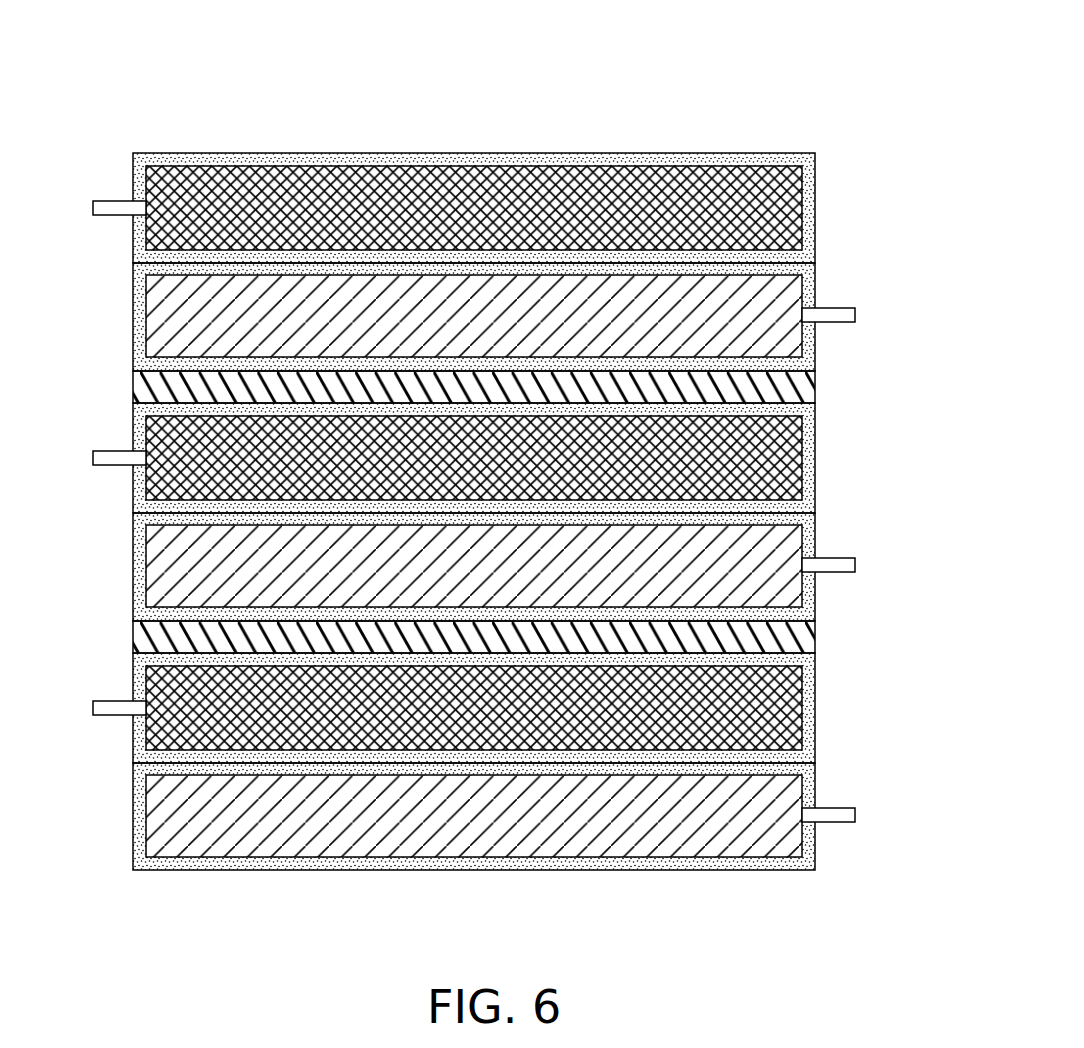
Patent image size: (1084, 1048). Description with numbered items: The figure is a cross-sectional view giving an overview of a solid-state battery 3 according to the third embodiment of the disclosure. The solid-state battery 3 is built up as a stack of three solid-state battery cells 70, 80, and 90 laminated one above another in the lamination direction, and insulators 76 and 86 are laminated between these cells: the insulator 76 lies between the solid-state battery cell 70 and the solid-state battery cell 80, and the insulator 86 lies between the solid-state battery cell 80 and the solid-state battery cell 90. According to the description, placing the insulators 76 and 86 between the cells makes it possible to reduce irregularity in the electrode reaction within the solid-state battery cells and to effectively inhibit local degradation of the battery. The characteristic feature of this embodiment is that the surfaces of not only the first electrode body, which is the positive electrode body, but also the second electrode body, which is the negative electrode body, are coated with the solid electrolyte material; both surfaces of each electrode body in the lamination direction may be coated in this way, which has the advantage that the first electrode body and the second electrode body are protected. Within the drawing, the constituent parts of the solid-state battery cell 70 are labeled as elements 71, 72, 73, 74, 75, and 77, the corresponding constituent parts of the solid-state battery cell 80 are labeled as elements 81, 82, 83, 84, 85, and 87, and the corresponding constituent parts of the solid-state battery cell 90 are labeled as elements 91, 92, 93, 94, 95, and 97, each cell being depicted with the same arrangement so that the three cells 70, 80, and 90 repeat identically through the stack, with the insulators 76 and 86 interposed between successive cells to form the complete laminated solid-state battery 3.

The solid-state battery 3 is at (782, 88).
The solid-state battery cell 70 is at (502, 262).
The first positive electrode layer 71 is at (802, 182).
The first positive electrode casing 72 is at (519, 208).
The first negative electrode layer 73 is at (802, 292).
The first positive electrode tab 74 is at (120, 215).
The first negative electrode tab 75 is at (853, 330).
The insulator 76 is at (815, 388).
The first negative electrode casing 77 is at (519, 309).
The solid-state battery cell 80 is at (502, 512).
The second positive electrode layer 81 is at (525, 458).
The second positive electrode casing 82 is at (519, 458).
The second negative electrode layer 83 is at (525, 566).
The second positive electrode tab 84 is at (94, 473).
The second negative electrode tab 85 is at (853, 580).
The insulator 86 is at (529, 637).
The second negative electrode casing 87 is at (519, 559).
The solid-state battery cell 90 is at (502, 761).
The third positive electrode layer 91 is at (525, 708).
The third positive electrode casing 92 is at (519, 708).
The third negative electrode layer 93 is at (525, 816).
The third positive electrode tab 94 is at (94, 723).
The third negative electrode tab 95 is at (853, 830).
The third negative electrode casing 97 is at (519, 809).